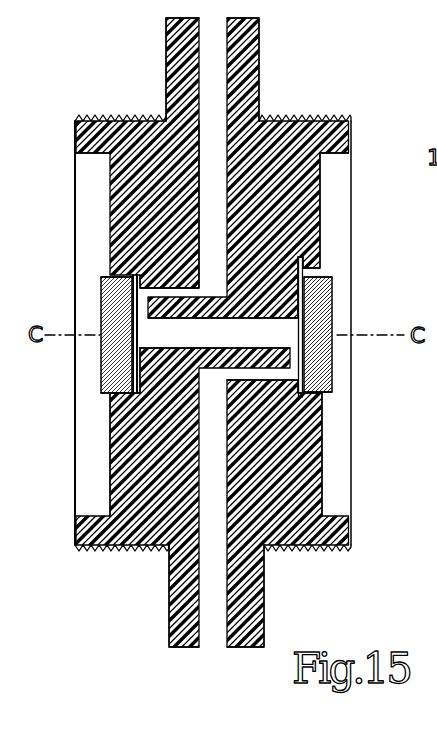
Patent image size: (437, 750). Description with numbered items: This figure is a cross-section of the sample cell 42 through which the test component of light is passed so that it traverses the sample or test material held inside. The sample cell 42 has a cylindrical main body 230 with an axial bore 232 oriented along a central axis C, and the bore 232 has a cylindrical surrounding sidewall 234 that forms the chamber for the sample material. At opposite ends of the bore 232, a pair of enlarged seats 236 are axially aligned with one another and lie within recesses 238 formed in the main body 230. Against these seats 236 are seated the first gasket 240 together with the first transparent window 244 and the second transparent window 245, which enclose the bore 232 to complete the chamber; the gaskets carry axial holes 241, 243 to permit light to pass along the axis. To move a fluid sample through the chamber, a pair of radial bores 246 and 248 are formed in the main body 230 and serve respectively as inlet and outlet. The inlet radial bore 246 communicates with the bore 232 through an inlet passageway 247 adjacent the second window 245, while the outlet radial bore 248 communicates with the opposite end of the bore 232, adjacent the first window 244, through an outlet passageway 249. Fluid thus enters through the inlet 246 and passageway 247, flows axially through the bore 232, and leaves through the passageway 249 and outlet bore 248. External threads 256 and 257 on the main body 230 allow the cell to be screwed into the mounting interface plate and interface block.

The sample cell 42 is at (322, 65).
The main body 230 is at (308, 166).
The axial bore 232 is at (320, 250).
The surrounding sidewall 234 is at (273, 350).
The enlarged seats 236 is at (122, 370).
The recesses 238 is at (352, 478).
The first gasket 240 is at (334, 284).
The axial hole 241 is at (157, 398).
The axial hole 243 is at (130, 312).
The first transparent window 244 is at (334, 303).
The second transparent window 245 is at (133, 372).
The radial bore 246 is at (216, 38).
The inlet passageway 247 is at (162, 290).
The outlet radial bore 248 is at (237, 617).
The outlet passageway 249 is at (276, 380).
The threads 256 is at (317, 116).
The threads 257 is at (122, 116).